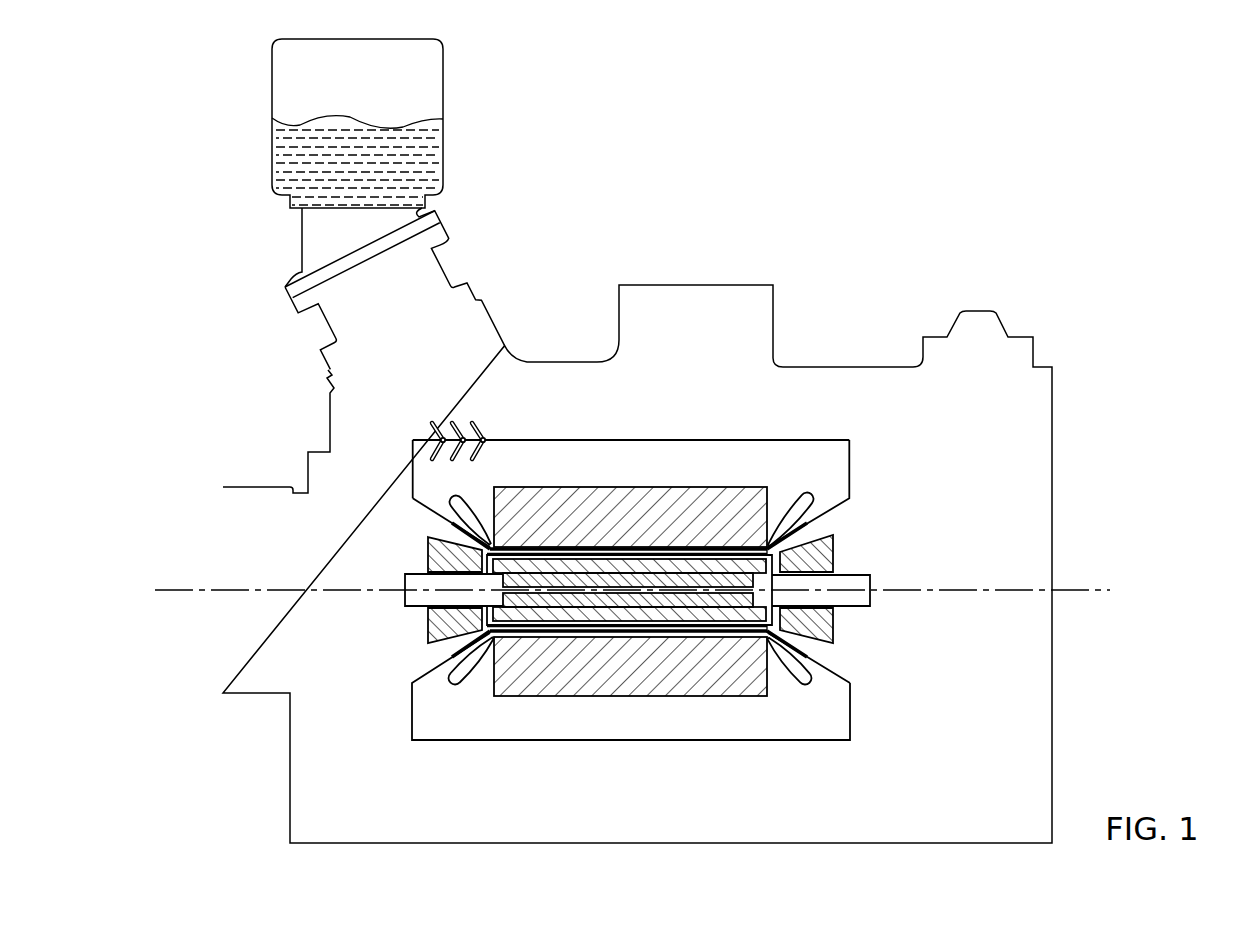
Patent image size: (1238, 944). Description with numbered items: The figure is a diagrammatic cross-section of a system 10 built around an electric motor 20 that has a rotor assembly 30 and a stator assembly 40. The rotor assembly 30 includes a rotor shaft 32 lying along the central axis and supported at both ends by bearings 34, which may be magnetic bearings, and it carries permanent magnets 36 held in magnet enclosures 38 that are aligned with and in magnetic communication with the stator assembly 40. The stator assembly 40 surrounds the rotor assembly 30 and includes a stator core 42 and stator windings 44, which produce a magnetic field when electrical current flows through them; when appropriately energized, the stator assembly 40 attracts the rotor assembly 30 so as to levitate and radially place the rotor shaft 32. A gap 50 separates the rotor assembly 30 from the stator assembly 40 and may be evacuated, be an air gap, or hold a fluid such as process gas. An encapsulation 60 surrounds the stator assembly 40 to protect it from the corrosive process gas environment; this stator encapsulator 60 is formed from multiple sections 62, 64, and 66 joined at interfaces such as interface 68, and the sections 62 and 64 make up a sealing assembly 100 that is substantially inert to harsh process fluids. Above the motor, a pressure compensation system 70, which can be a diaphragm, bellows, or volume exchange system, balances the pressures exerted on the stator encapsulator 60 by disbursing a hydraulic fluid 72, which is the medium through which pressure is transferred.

The system 10 is at (1130, 100).
The motor 20 is at (330, 417).
The rotor assembly 30 is at (858, 611).
The rotor shaft 32 is at (405, 605).
The bearings 34 is at (430, 647).
The permanent magnets 36 is at (503, 583).
The magnet enclosures 38 is at (497, 565).
The stator assembly 40 is at (717, 447).
The stator core 42 is at (657, 487).
The stator windings 44 is at (810, 495).
The gap 50 is at (773, 552).
The stator encapsulation 60 is at (852, 450).
The stator encapsulator section 62 is at (530, 551).
The stator encapsulator section 64 is at (430, 505).
The stator encapsulator section 66 is at (412, 468).
The interface 68 is at (415, 497).
The pressure compensation system 70 is at (443, 82).
The hydraulic fluid 72 is at (443, 157).
The sealing assembly 100 is at (833, 586).